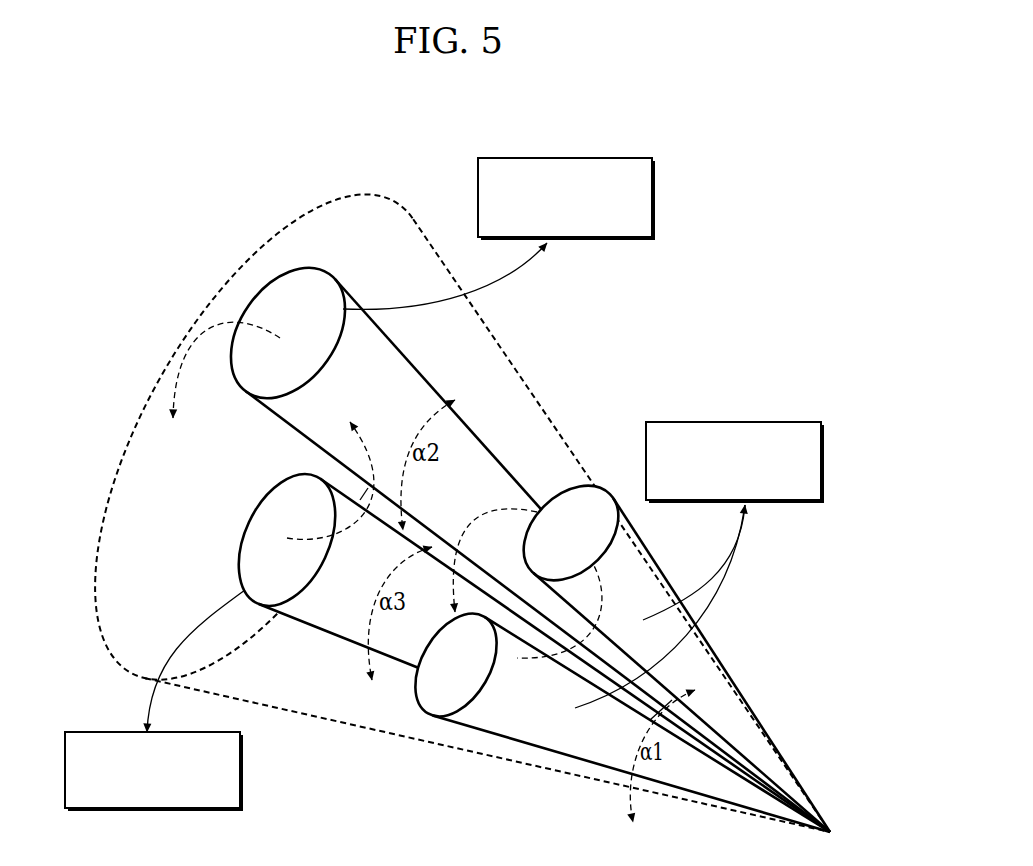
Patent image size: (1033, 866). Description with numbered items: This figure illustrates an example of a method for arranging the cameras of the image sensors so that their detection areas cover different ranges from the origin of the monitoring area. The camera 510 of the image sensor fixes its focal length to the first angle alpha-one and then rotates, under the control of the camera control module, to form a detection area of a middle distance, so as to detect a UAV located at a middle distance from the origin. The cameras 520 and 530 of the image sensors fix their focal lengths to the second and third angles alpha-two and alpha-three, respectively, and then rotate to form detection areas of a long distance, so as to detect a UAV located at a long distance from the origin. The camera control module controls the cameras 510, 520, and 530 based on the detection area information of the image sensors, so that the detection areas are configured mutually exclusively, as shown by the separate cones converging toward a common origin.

The camera of image sensor for middle distance 510 is at (771, 422).
The camera of image sensor for long distance 520 is at (603, 158).
The camera of image sensor for long distance 530 is at (240, 770).